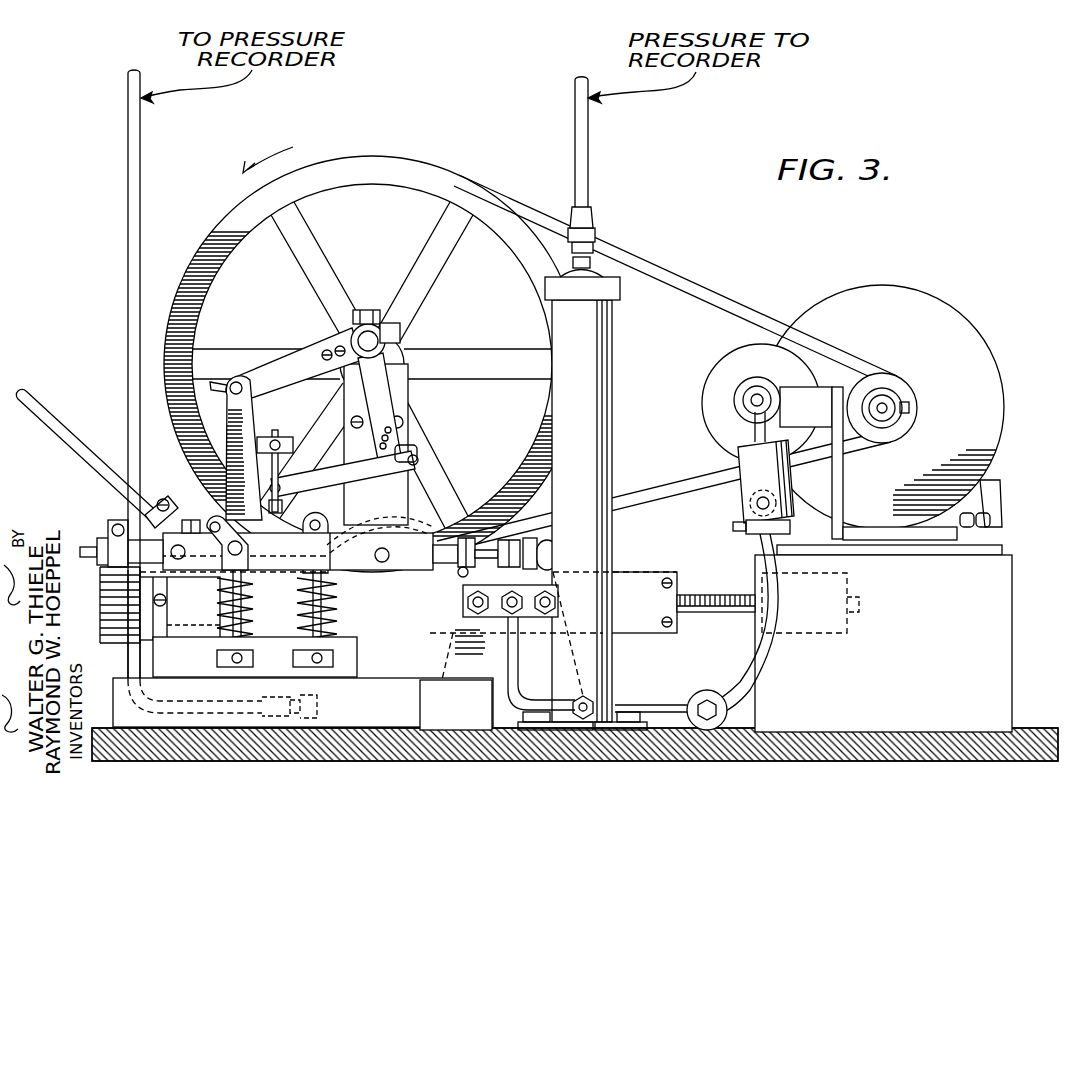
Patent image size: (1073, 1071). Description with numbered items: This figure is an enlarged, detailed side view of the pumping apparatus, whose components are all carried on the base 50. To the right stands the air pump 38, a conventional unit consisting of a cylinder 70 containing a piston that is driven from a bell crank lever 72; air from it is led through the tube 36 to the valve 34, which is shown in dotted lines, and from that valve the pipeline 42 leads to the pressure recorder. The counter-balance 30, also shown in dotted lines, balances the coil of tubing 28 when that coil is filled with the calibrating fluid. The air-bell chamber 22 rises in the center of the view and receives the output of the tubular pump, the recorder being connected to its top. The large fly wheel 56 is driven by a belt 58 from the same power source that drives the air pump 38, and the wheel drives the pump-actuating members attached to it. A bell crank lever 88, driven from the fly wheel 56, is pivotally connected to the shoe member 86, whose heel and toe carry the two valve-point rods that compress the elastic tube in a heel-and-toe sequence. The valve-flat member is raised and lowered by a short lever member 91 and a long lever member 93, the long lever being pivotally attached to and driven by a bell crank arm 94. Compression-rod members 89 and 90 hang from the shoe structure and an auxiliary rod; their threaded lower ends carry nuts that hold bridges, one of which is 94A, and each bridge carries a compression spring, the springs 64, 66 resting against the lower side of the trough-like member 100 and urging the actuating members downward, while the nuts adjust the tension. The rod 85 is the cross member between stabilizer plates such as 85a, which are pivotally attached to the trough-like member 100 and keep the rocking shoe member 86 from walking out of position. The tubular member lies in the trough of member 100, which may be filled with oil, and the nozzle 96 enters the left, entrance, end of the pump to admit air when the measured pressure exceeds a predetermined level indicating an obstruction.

The air-bell chamber 22 is at (607, 365).
The coil of tubing 28 is at (137, 637).
The counter-balance 30 is at (853, 575).
The valve 34 is at (297, 693).
The tube 36 is at (768, 670).
The air pump 38 is at (927, 308).
The pipeline 42 is at (168, 700).
The base 50 is at (1036, 729).
The fly wheel 56 is at (383, 167).
The belt 58 is at (728, 300).
The compression spring 64 is at (258, 587).
The compression spring 66 is at (340, 590).
The cylinder 70 is at (746, 466).
The bell crank lever 72 is at (753, 432).
The rod 85 is at (216, 518).
The stabilizer plate 85a is at (283, 550).
The shoe member 86 is at (240, 425).
The bell crank lever 88 is at (285, 370).
The compression-rod member 89 is at (230, 540).
The compression-rod member 90 is at (320, 514).
The short lever member 91 is at (265, 440).
The long lever member 93 is at (315, 478).
The bell crank arm 94 is at (253, 658).
The bridge 94A is at (329, 668).
The nozzle 96 is at (62, 435).
The trough-like member 100 is at (410, 556).